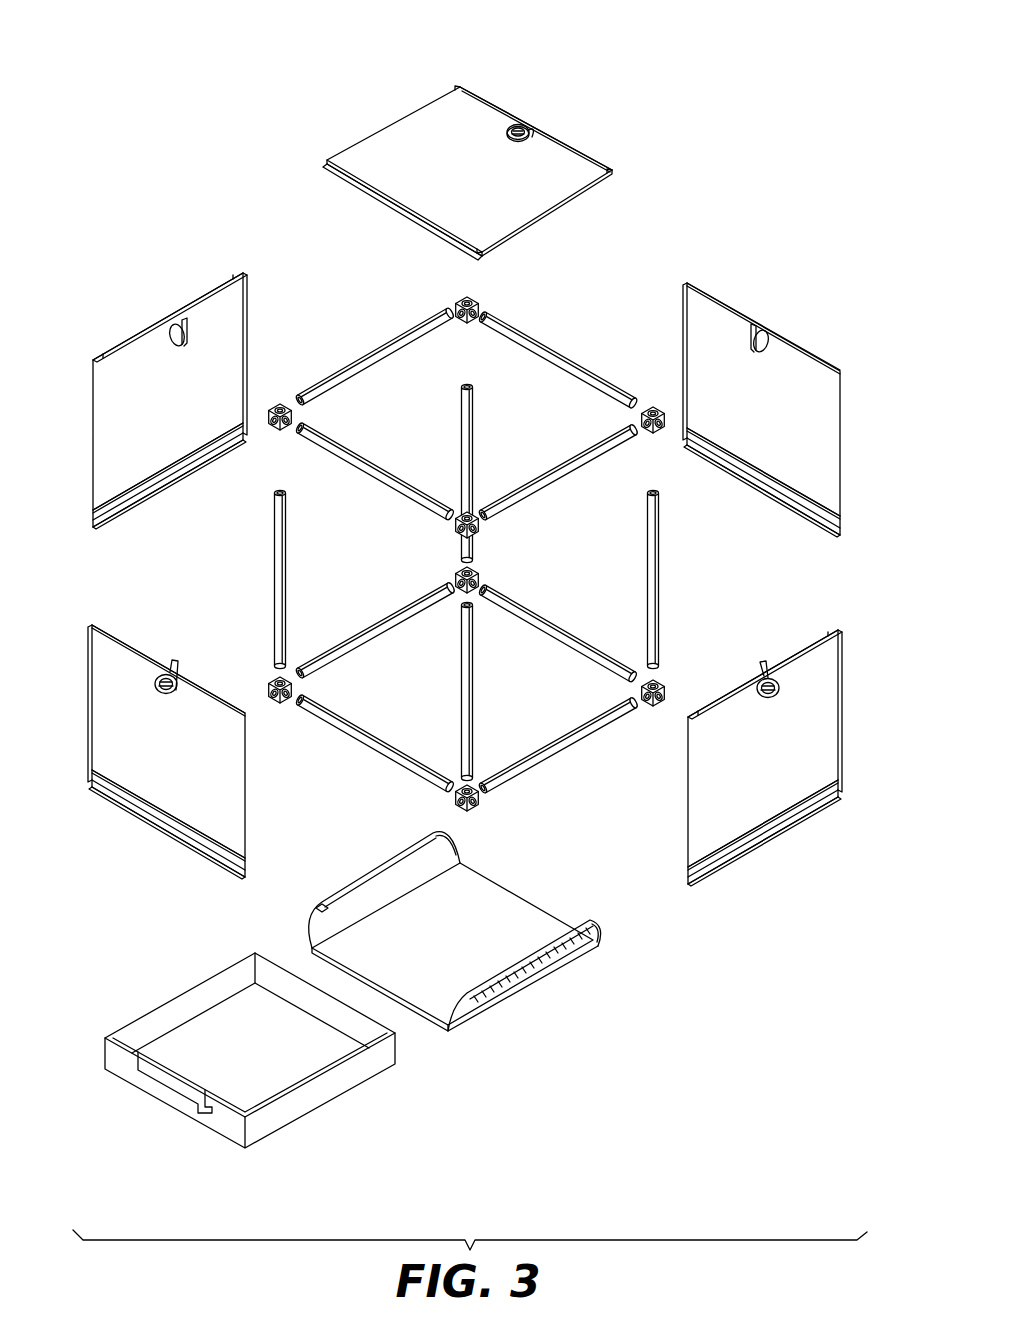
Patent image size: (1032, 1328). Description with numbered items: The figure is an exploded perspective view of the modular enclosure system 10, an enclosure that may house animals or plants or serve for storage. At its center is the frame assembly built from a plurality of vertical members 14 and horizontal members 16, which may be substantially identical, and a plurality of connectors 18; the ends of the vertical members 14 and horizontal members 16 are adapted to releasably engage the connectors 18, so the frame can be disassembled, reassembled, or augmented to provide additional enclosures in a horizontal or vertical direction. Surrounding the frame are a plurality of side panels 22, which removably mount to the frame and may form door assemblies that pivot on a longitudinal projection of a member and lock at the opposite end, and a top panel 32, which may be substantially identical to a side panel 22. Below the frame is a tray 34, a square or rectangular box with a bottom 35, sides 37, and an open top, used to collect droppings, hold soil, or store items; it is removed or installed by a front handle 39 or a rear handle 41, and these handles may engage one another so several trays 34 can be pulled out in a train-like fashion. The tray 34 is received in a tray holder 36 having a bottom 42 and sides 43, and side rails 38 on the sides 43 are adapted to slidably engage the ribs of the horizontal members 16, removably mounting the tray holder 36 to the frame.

The modular enclosure system 10 is at (665, 85).
The vertical members 14 is at (476, 423).
The horizontal members 16 is at (378, 358).
The connectors 18 is at (283, 398).
The side panels 22 is at (134, 421).
The top panel 32 is at (449, 173).
The tray 34 is at (250, 1055).
The bottom 35 is at (235, 1056).
The tray holder 36 is at (464, 934).
The sides 37 is at (300, 1005).
The side rails 38 is at (358, 872).
The front handle 39 is at (170, 1095).
The rear handle 41 is at (306, 980).
The bottom 42 is at (402, 958).
The sides 43 is at (452, 852).